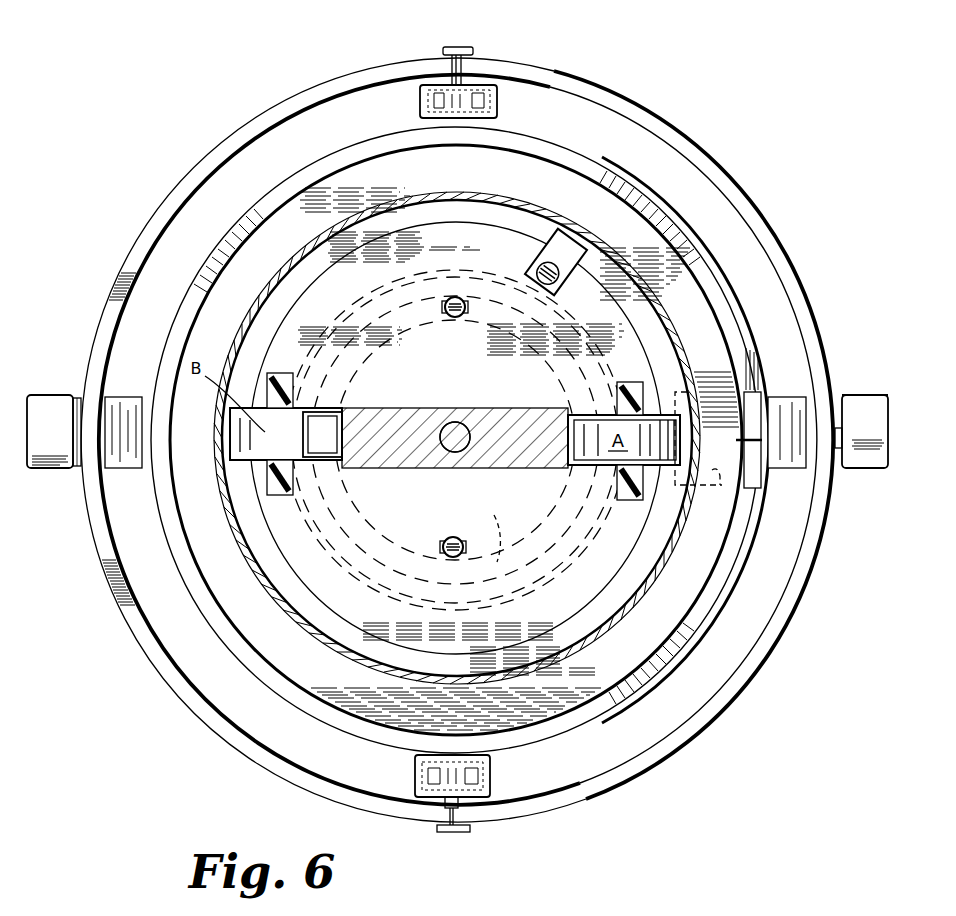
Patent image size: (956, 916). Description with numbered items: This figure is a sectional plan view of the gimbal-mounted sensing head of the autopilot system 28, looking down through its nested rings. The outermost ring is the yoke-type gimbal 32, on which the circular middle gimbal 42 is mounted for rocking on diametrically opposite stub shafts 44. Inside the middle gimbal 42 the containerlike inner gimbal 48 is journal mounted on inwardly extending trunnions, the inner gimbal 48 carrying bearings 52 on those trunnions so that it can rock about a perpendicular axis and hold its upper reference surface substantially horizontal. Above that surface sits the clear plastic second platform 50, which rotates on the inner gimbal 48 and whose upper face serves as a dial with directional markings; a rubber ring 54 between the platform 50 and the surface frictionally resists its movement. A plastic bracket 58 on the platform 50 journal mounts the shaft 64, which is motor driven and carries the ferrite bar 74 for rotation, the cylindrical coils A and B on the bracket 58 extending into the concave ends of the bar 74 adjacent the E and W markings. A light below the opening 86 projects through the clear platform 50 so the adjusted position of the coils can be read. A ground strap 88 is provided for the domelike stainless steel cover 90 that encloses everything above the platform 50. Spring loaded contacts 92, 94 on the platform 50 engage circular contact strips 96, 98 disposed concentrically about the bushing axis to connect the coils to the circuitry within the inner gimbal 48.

The autopilot system 28 is at (760, 150).
The gimbal 32 is at (860, 469).
The middle gimbal 42 is at (750, 667).
The stub shafts 44 is at (81, 432).
The inner gimbal 48 is at (585, 166).
The second platform 50 is at (452, 80).
The bearings 52 is at (491, 82).
The rubber ring 54 is at (357, 581).
The bracket 58 is at (640, 393).
The shaft 64 is at (455, 422).
The ferrite bar 74 is at (497, 408).
The opening 86 is at (713, 490).
The ground strap 88 is at (547, 254).
The domelike cover 90 is at (519, 209).
The spring loaded contact 92 is at (452, 535).
The spring loaded contact 94 is at (453, 296).
The circular contact strip 96 is at (418, 535).
The circular contact strip 98 is at (494, 515).